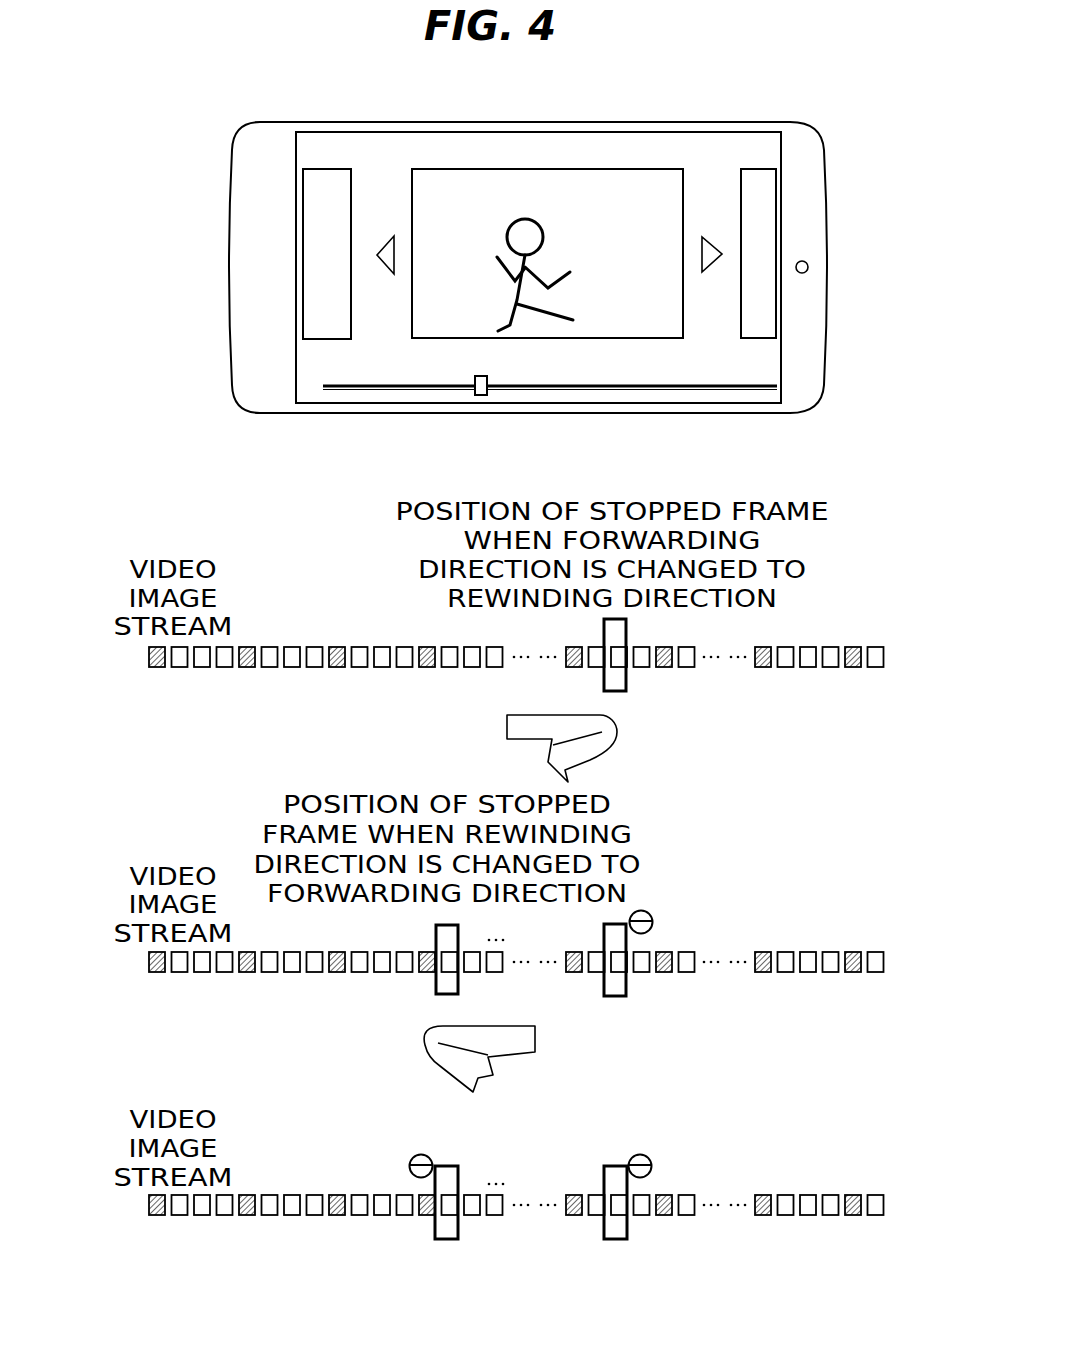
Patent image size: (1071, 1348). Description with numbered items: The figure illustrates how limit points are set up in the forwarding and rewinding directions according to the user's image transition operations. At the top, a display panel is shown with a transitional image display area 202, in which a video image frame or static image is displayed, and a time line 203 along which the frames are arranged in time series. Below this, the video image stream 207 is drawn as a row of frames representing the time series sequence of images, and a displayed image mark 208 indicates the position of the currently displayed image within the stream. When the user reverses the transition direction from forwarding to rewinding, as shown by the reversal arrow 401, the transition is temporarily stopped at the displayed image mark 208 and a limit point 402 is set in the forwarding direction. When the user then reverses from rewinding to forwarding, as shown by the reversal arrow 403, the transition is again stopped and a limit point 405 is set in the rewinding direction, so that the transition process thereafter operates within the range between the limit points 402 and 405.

The transitional image display area 202 is at (588, 170).
The time line 203 is at (375, 390).
The video image stream 207 is at (178, 667).
The displayed image mark 208 is at (626, 681).
The reversal arrow 401 is at (548, 758).
The limit point 402 is at (649, 912).
The reversal arrow 403 is at (425, 1045).
The limit point 405 is at (419, 1155).